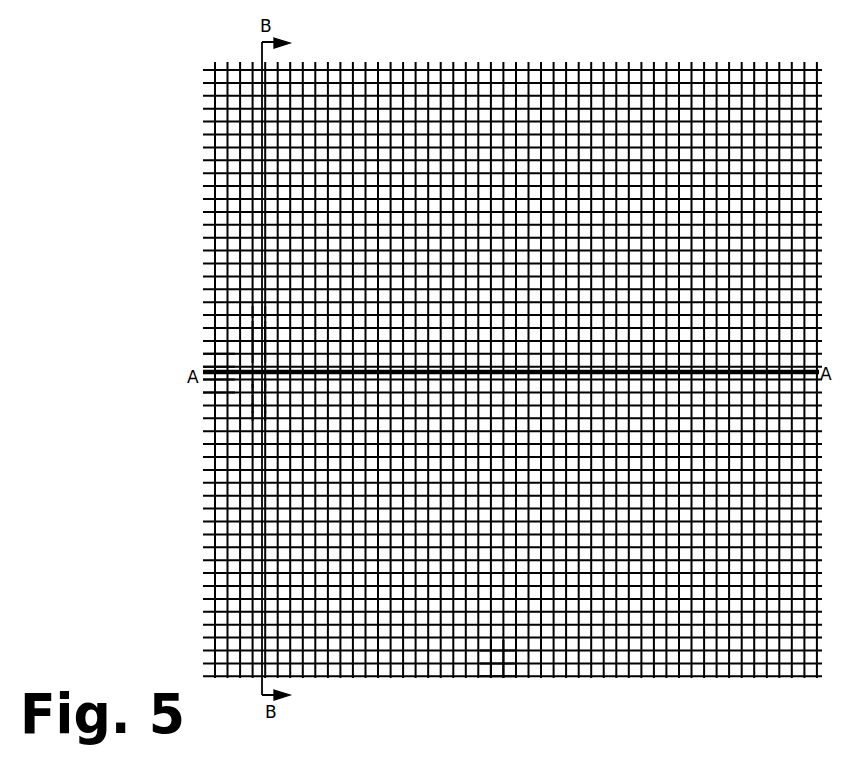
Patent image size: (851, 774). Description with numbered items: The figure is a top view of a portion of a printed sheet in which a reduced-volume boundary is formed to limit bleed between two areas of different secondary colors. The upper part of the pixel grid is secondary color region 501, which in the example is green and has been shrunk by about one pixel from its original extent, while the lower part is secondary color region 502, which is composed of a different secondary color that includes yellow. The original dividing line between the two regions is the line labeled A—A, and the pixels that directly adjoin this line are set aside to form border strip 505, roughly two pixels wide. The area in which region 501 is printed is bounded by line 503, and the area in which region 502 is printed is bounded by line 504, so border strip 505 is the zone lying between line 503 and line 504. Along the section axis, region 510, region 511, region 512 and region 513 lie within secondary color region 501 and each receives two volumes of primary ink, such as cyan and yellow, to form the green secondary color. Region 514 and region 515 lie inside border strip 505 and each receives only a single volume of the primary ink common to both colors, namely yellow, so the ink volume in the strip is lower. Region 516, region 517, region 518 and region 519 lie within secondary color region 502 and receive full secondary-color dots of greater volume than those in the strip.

The secondary color region 501 is at (497, 87).
The secondary color region 502 is at (498, 655).
The line 503 is at (210, 358).
The line 504 is at (210, 387).
The border strip 505 is at (208, 363).
The region 510 is at (257, 327).
The region 511 is at (255, 338).
The region 512 is at (257, 348).
The region 513 is at (257, 358).
The region 514 is at (257, 312).
The region 515 is at (256, 383).
The region 516 is at (256, 389).
The region 517 is at (257, 400).
The region 518 is at (257, 408).
The region 519 is at (258, 416).